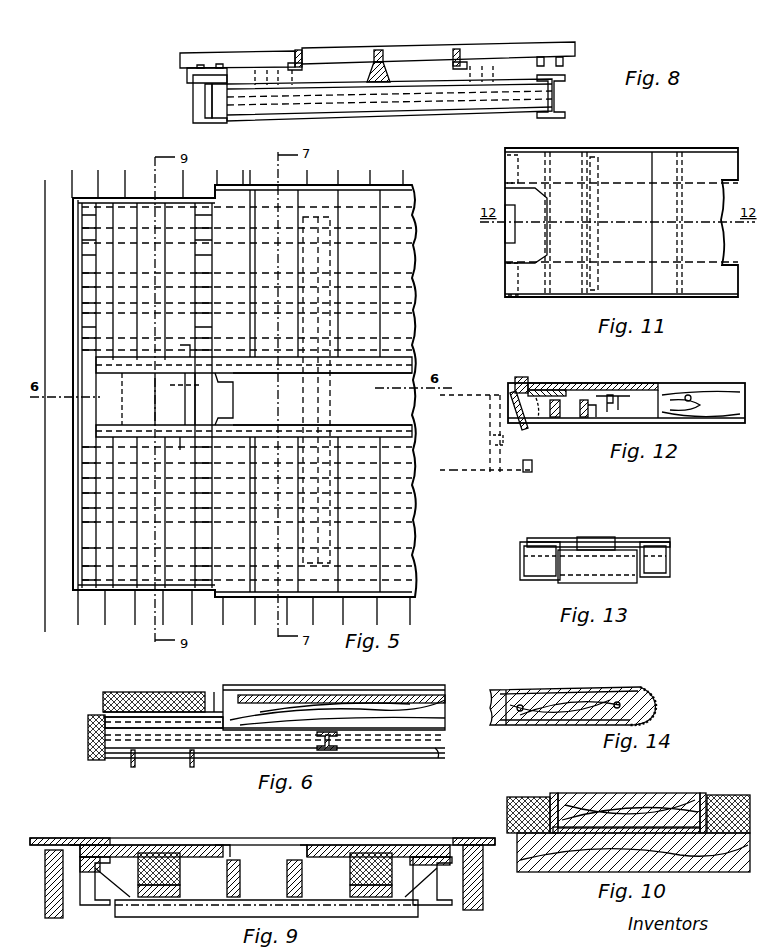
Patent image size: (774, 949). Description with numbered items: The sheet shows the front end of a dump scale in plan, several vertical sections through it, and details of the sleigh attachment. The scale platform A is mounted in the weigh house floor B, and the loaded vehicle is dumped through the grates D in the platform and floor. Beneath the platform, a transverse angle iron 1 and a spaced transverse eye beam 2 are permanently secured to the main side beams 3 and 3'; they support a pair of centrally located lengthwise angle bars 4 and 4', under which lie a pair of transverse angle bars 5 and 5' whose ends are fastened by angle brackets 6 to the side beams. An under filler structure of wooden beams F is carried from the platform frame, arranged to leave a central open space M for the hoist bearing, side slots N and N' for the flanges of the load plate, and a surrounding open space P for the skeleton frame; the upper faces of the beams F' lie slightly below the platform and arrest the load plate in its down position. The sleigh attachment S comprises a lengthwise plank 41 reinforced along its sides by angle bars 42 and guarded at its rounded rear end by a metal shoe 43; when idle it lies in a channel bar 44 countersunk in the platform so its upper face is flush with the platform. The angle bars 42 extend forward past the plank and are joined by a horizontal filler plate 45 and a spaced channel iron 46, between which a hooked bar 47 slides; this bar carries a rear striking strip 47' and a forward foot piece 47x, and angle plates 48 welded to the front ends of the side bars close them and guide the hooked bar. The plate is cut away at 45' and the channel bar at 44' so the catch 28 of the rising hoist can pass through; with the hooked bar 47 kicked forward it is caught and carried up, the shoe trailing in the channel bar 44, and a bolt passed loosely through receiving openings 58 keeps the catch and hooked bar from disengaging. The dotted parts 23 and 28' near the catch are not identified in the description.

In FIG. 5, the transverse angle iron 1 is at (78, 573).
In FIG. 6, the transverse angle iron 1 is at (88, 740).
In FIG. 5, the transverse eye beam 2 is at (348, 532).
In FIG. 6, the transverse eye beam 2 is at (335, 750).
In FIG. 8, the main side beam 3 is at (389, 99).
In FIG. 5, the main side beam 3 is at (425, 579).
In FIG. 9, the main side beam 3 is at (434, 881).
In FIG. 8, the main side beam 3' is at (189, 101).
In FIG. 5, the main side beam 3' is at (425, 210).
In FIG. 6, the main side beam 3' is at (429, 762).
In FIG. 9, the main side beam 3' is at (88, 881).
In FIG. 6, the lengthwise extending angle bar 4 is at (275, 760).
In FIG. 9, the lengthwise extending angle bar 4 is at (266, 914).
In FIG. 9, the lengthwise extending angle bar 4' is at (211, 917).
In FIG. 5, the transversely extending angle bar 5 is at (140, 392).
In FIG. 6, the transversely extending angle bar 5 is at (180, 771).
In FIG. 5, the transversely extending angle bar 5' is at (180, 399).
In FIG. 6, the transversely extending angle bar 5' is at (121, 771).
In FIG. 9, the transversely extending angle bar 5' is at (143, 924).
In FIG. 9, the angle bracket 6 is at (110, 895).
In FIG. 12, the dashed support frame 23 is at (490, 422).
In FIG. 12, the catch 28 is at (513, 485).
In FIG. 12, the bracket 28' is at (476, 377).
In FIG. 11, the plank 41 is at (706, 285).
In FIG. 12, the plank 41 is at (728, 390).
In FIG. 14, the plank 41 is at (570, 692).
In FIG. 10, the plank 41 is at (612, 800).
In FIG. 11, the angle bar 42 is at (722, 160).
In FIG. 12, the angle bar 42 is at (715, 423).
In FIG. 13, the angle bar 42 is at (522, 559).
In FIG. 14, the angle bar 42 is at (500, 692).
In FIG. 10, the angle bar 42 is at (554, 793).
In FIG. 14, the metal shoe 43 is at (652, 712).
In FIG. 5, the channel bar 44 is at (322, 421).
In FIG. 10, the channel bar 44 is at (633, 865).
In FIG. 5, the cut-away opening 44' is at (272, 390).
In FIG. 11, the horizontal filler plate 45 is at (638, 142).
In FIG. 12, the horizontal filler plate 45 is at (593, 370).
In FIG. 13, the horizontal filler plate 45 is at (598, 528).
In FIG. 11, the cut-away opening 45' is at (588, 199).
In FIG. 13, the cut-away opening 45' is at (548, 526).
In FIG. 11, the channel iron 46 is at (540, 297).
In FIG. 12, the channel iron 46 is at (575, 408).
In FIG. 13, the channel iron 46 is at (553, 565).
In FIG. 11, the hooked bar 47 is at (506, 233).
In FIG. 12, the hooked bar 47 is at (547, 374).
In FIG. 13, the hooked bar 47 is at (597, 577).
In FIG. 11, the rear striking strip 47' is at (614, 223).
In FIG. 12, the rear striking strip 47' is at (611, 418).
In FIG. 11, the forward foot piece 47x is at (505, 235).
In FIG. 12, the forward foot piece 47x is at (522, 377).
In FIG. 13, the forward foot piece 47x is at (597, 537).
In FIG. 11, the angle plate 48 is at (505, 168).
In FIG. 12, the angle plate 48 is at (535, 415).
In FIG. 13, the angle plate 48 is at (530, 566).
In FIG. 12, the receiving opening 58 is at (515, 416).
In FIG. 8, the scale platform A is at (508, 47).
In FIG. 5, the scale platform A is at (354, 251).
In FIG. 6, the scale platform A is at (412, 694).
In FIG. 9, the scale platform A is at (416, 845).
In FIG. 10, the scale platform A is at (735, 795).
In FIG. 5, the weigh house floor B is at (128, 605).
In FIG. 9, the weigh house floor B is at (55, 838).
In FIG. 8, the grate D is at (415, 48).
In FIG. 5, the under filler structure F is at (134, 395).
In FIG. 6, the under filler structure F is at (163, 687).
In FIG. 9, the under filler structure F is at (265, 853).
In FIG. 5, the filler structure beam F' is at (246, 391).
In FIG. 6, the filler structure beam F' is at (154, 685).
In FIG. 9, the filler structure beam F' is at (265, 832).
In FIG. 5, the central open space M is at (254, 397).
In FIG. 6, the central open space M is at (130, 720).
In FIG. 9, the central open space M is at (264, 878).
In FIG. 5, the side slot N is at (188, 457).
In FIG. 5, the side slot N' is at (182, 335).
In FIG. 5, the surrounding open space P is at (117, 198).
In FIG. 6, the surrounding open space P is at (90, 712).
In FIG. 9, the surrounding open space P is at (83, 845).
In FIG. 11, the sleigh attachment S is at (621, 222).
In FIG. 12, the sleigh attachment S is at (690, 383).
In FIG. 13, the sleigh attachment S is at (672, 540).
In FIG. 14, the sleigh attachment S is at (626, 692).
In FIG. 10, the sleigh attachment S is at (638, 798).